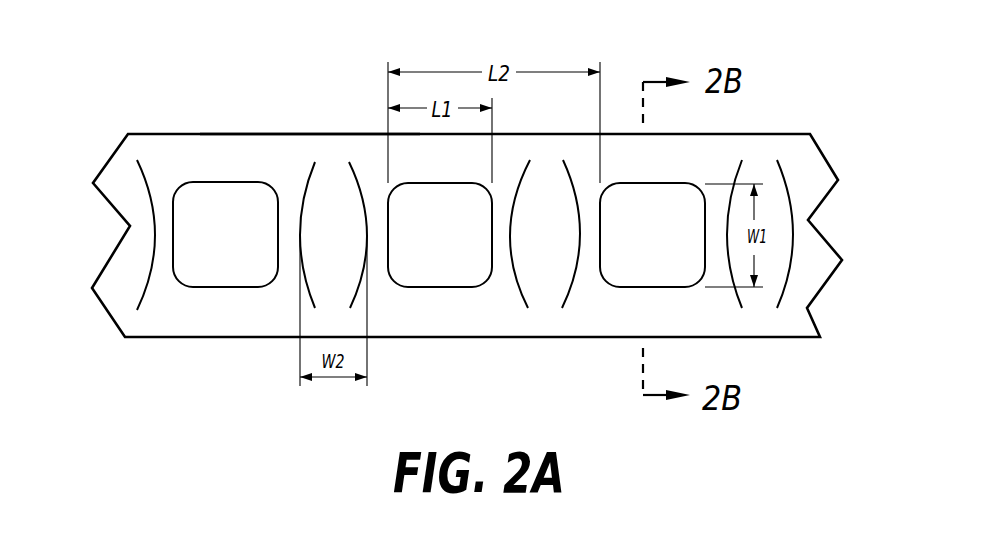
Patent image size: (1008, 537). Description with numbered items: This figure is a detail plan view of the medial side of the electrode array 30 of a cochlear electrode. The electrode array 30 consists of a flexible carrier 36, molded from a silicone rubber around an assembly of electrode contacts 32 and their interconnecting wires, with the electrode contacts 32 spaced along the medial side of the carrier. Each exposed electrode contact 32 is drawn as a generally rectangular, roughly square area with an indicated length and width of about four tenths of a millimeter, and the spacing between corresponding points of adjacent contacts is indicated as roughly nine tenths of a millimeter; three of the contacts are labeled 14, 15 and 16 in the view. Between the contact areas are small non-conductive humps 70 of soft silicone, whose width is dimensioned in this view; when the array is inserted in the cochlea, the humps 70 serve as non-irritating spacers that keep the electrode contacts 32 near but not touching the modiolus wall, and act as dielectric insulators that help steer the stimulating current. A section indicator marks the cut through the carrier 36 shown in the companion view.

The electrode array 30 is at (122, 107).
The flexible carrier 36 is at (280, 134).
The electrode contact 14 is at (248, 246).
The electrode contact 15 is at (461, 246).
The electrode contact 16 is at (673, 246).
The electrode contact 32 is at (226, 287).
The hump 70 is at (328, 198).